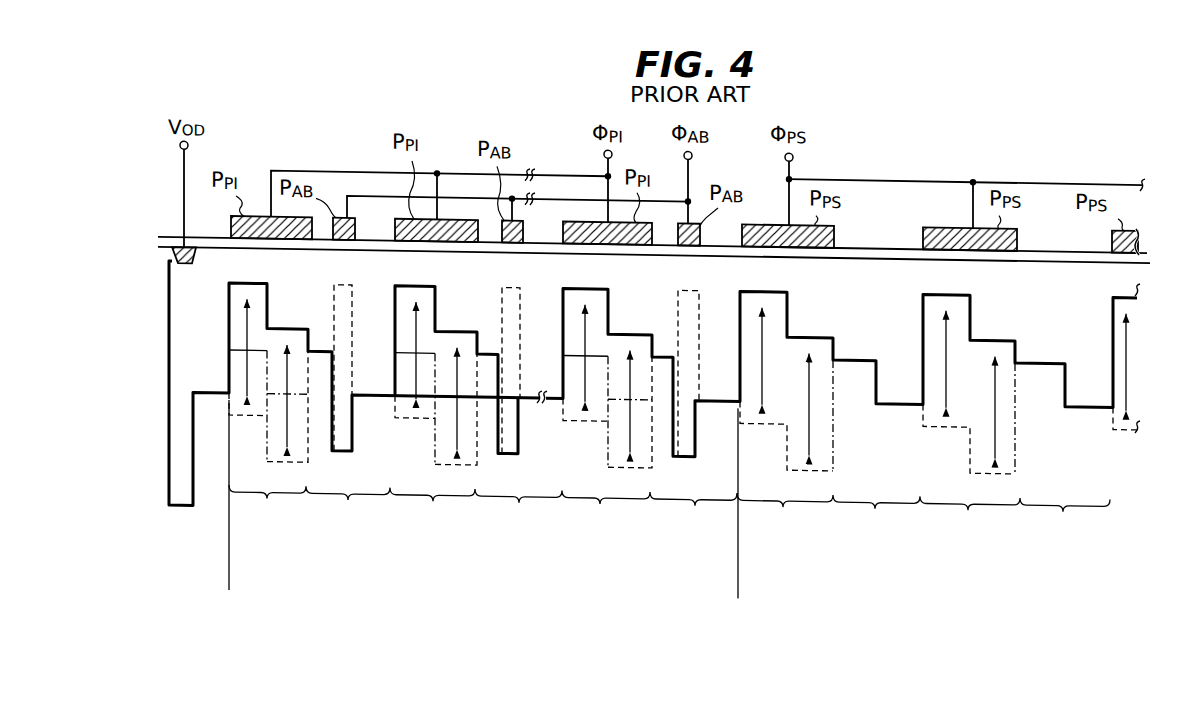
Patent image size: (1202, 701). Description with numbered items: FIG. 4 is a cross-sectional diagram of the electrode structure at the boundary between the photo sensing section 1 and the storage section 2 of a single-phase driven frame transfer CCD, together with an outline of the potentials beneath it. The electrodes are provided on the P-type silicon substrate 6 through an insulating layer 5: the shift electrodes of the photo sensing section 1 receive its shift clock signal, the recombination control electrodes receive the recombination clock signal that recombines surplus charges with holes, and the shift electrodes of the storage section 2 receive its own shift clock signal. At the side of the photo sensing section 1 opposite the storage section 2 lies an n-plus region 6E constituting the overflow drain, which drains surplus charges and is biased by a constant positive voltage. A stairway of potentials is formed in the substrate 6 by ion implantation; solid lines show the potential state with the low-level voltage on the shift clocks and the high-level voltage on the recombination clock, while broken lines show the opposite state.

The photo sensing section 1 is at (229, 580).
The storage section 2 is at (738, 580).
The insulating layer 5 is at (1146, 247).
The P-type silicon substrate 6 is at (1152, 252).
The n+ region 6E is at (172, 254).